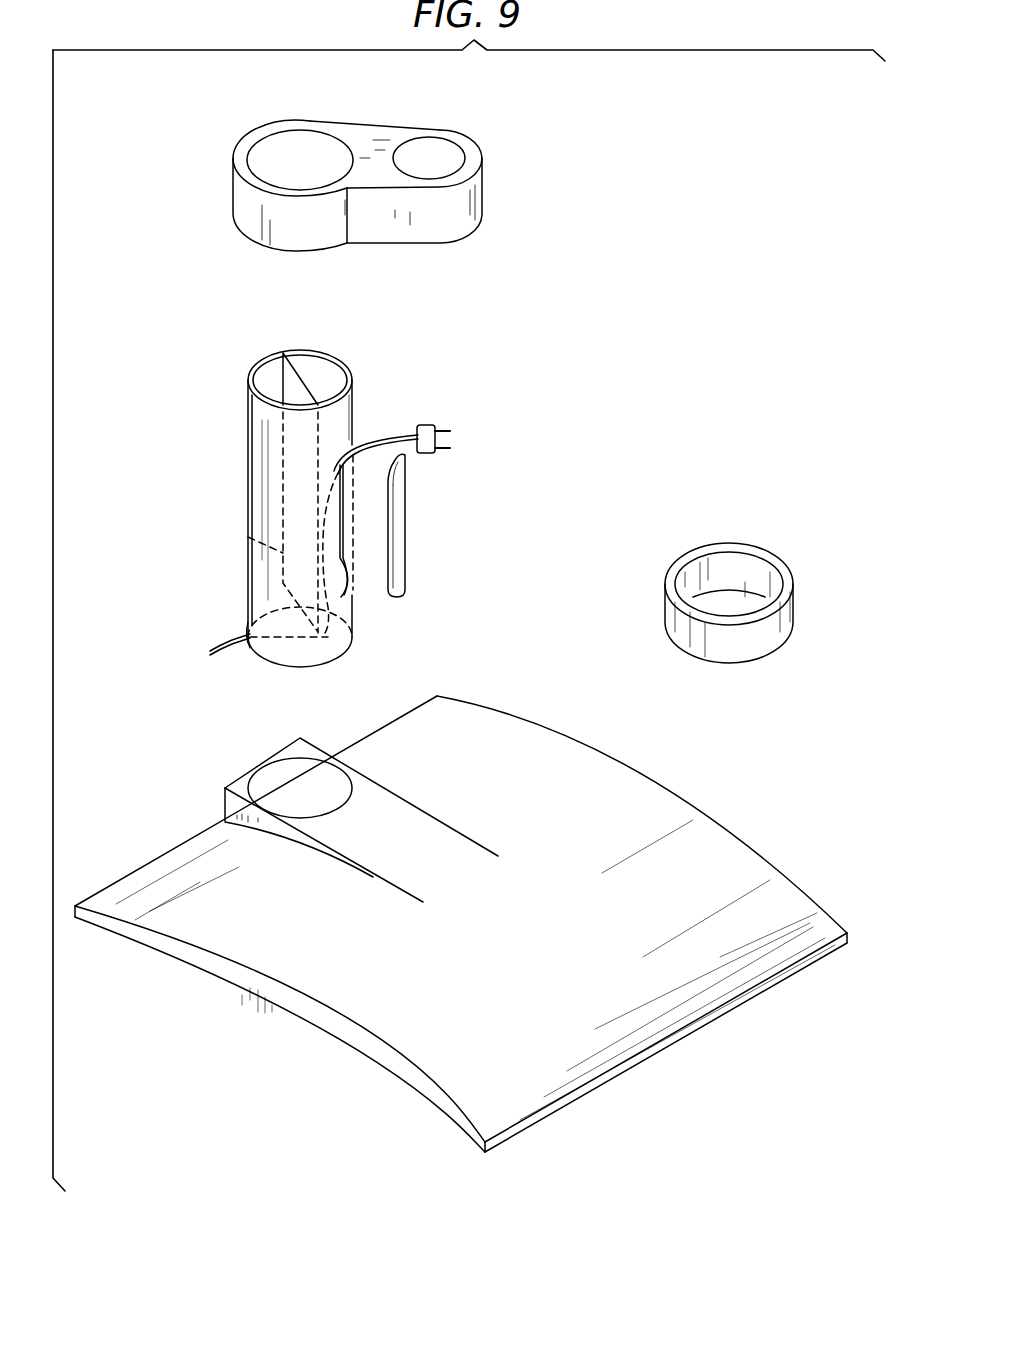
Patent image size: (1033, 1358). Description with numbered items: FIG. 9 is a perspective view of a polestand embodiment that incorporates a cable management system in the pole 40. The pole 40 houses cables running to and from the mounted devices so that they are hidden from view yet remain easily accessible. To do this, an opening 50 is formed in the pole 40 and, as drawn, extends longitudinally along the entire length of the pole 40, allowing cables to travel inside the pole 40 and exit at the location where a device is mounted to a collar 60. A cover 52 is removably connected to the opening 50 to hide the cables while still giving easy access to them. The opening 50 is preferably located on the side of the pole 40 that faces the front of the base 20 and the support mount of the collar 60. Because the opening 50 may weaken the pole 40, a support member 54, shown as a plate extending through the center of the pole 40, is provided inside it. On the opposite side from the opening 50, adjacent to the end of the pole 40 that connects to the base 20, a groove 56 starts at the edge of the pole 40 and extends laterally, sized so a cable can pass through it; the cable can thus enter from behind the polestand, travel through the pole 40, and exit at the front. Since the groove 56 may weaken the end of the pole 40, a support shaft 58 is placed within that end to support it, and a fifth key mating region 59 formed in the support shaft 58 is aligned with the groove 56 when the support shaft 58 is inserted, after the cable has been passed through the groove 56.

The base 20 is at (738, 834).
The pole 40 is at (248, 468).
The opening 50 is at (358, 524).
The cover 52 is at (407, 514).
The support member 54 is at (248, 537).
The groove 56 is at (249, 624).
The support shaft 58 is at (780, 556).
The fifth key mating region 59 is at (654, 607).
The collar 60 is at (477, 142).